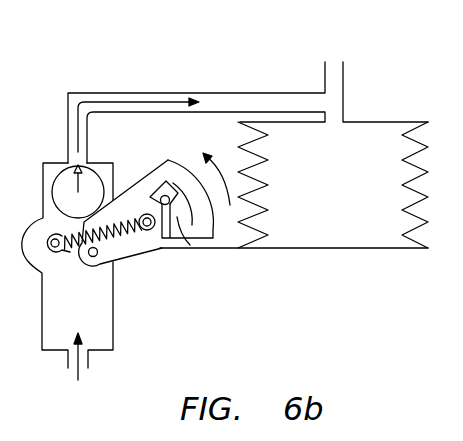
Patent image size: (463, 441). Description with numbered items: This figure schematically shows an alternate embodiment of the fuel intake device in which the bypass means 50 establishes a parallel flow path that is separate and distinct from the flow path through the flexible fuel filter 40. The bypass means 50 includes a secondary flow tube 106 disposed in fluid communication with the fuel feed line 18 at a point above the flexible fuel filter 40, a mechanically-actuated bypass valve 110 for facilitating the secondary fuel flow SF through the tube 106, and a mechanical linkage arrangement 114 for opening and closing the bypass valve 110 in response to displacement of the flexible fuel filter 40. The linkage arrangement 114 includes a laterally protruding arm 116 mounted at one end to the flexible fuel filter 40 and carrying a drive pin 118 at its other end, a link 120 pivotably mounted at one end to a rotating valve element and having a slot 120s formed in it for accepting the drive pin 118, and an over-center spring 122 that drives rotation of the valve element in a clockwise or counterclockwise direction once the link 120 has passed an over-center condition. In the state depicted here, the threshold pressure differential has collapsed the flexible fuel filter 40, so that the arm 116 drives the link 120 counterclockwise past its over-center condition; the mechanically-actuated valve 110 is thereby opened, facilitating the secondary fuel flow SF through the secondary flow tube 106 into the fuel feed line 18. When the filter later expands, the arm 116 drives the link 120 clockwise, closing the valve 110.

The bypass means 50 is at (63, 74).
The secondary fuel flow SF is at (143, 98).
The secondary flow tube 106 is at (268, 93).
The fuel feed line 18 is at (343, 82).
The flexible fuel filter 40 is at (425, 145).
The mechanically-actuated bypass valve 110 is at (45, 158).
The mechanical linkage arrangement 114 is at (141, 276).
The laterally protruding arm 116 is at (228, 247).
The drive pin 118 is at (162, 197).
The link 120 is at (164, 170).
The slot 120s is at (190, 245).
The over-center spring 122 is at (70, 256).